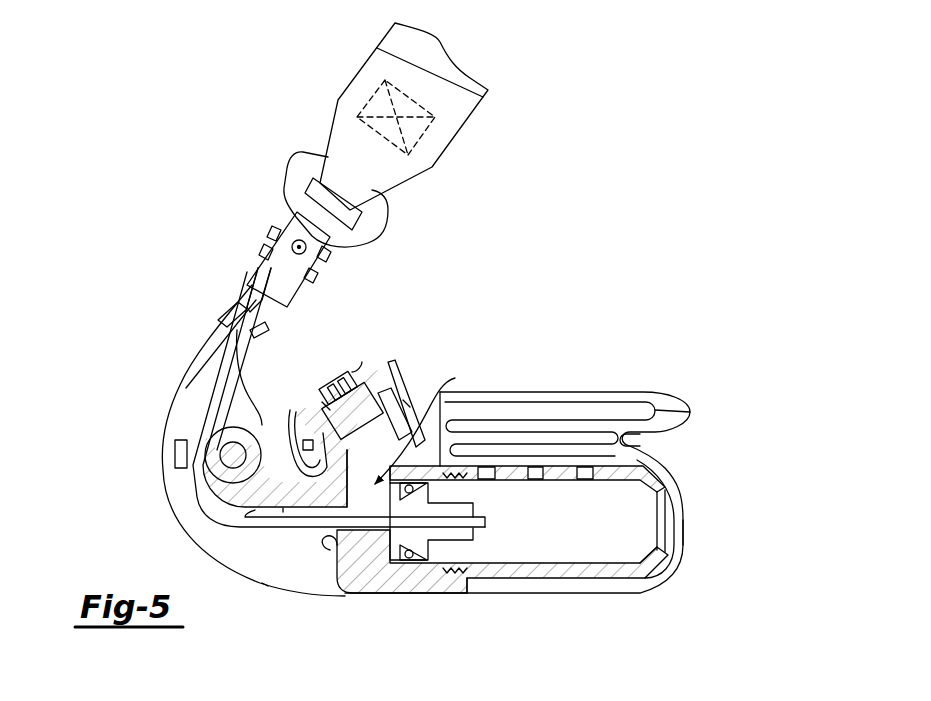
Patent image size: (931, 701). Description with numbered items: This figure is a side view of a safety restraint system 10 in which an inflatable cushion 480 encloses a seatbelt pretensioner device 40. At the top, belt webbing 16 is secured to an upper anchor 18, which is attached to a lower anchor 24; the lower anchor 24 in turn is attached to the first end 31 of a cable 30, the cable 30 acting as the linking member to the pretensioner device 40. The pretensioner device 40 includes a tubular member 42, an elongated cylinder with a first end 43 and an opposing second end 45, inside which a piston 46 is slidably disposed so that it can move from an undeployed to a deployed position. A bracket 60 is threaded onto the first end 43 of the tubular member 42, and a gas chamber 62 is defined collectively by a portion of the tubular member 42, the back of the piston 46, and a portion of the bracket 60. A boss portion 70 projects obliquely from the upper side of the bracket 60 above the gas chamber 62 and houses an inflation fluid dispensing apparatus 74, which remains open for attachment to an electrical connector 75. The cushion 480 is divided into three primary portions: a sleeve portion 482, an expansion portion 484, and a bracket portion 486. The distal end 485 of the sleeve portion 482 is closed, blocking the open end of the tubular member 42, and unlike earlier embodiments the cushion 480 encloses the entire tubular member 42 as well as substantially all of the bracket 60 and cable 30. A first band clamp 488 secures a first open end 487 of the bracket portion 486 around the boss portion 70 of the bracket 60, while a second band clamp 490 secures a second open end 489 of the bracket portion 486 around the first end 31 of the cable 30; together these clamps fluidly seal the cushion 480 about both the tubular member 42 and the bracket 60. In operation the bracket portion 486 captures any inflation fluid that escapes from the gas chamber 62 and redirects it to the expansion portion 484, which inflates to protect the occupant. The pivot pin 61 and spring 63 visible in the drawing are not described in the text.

The safety restraint system 10 is at (424, 300).
The belt webbing 16 is at (340, 104).
The upper anchor 18 is at (297, 174).
The lower anchor 24 is at (256, 272).
The cable 30 is at (177, 390).
The first end of cable 31 is at (272, 314).
The pretensioner device 40 is at (240, 541).
The tubular member 42 is at (537, 578).
The first end of cylinder 43 is at (470, 578).
The second end of cylinder 45 is at (652, 573).
The piston 46 is at (488, 535).
The bracket 60 is at (283, 509).
The pivot pin 61 is at (233, 427).
The gas chamber 62 is at (426, 428).
The spring 63 is at (292, 456).
The boss portion 70 is at (390, 362).
The inflation fluid dispensing apparatus 74 is at (353, 432).
The electrical connector 75 is at (344, 368).
The inflatable cushion 480 is at (568, 390).
The sleeve portion 482 is at (592, 593).
The expansion portion 484 is at (690, 412).
The distal end of sleeve portion 485 is at (684, 522).
The bracket portion 486 is at (165, 433).
The first open end 487 is at (311, 403).
The first band clamp 488 is at (405, 395).
The second open end 489 is at (250, 343).
The second band clamp 490 is at (222, 316).